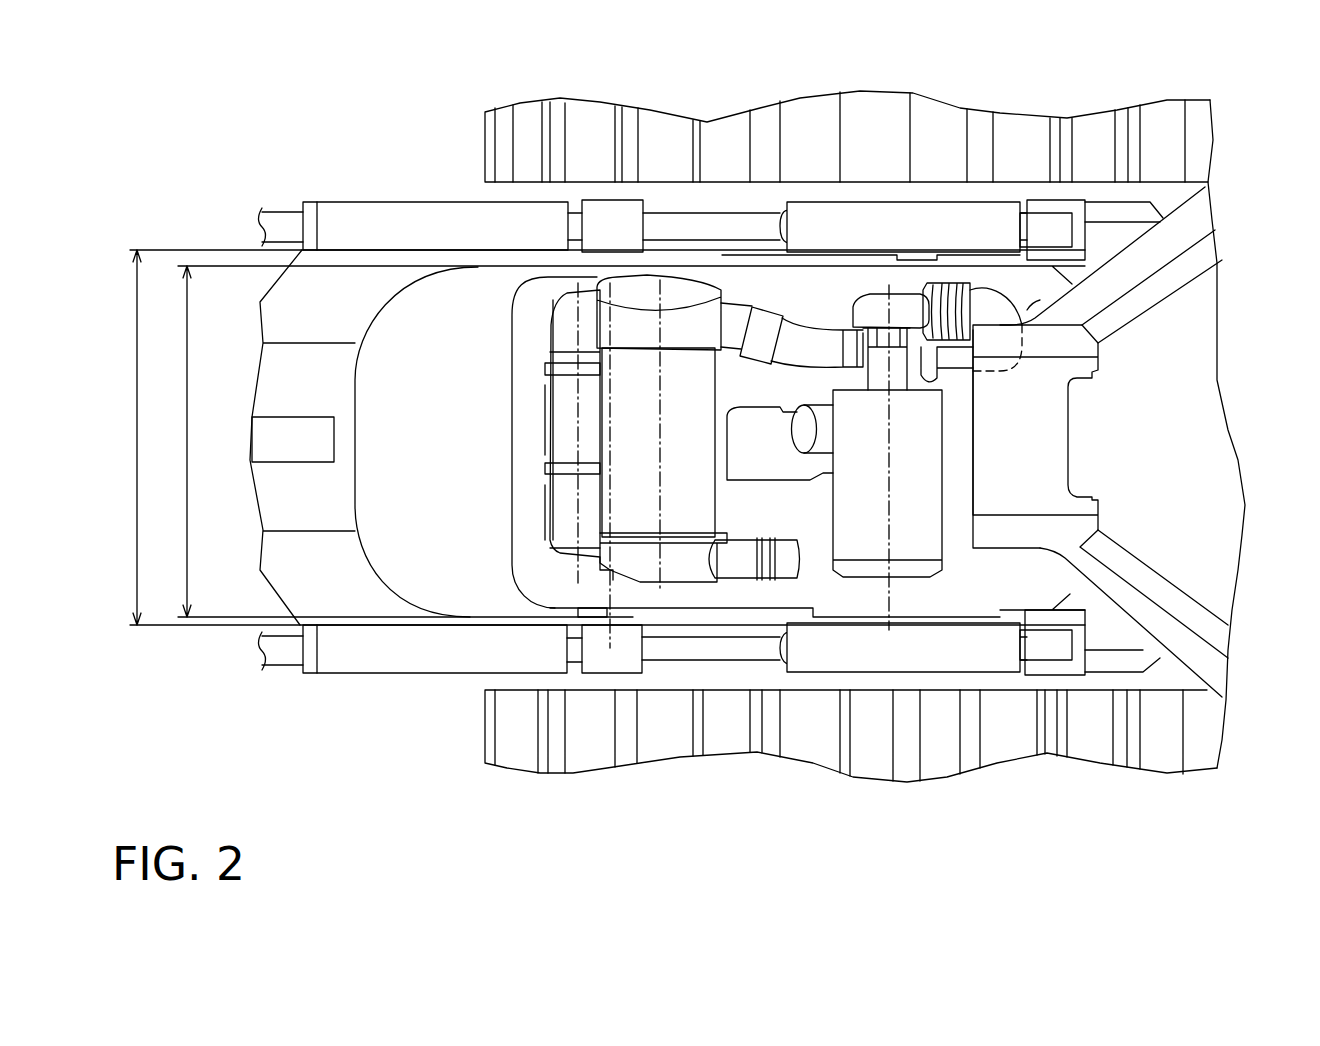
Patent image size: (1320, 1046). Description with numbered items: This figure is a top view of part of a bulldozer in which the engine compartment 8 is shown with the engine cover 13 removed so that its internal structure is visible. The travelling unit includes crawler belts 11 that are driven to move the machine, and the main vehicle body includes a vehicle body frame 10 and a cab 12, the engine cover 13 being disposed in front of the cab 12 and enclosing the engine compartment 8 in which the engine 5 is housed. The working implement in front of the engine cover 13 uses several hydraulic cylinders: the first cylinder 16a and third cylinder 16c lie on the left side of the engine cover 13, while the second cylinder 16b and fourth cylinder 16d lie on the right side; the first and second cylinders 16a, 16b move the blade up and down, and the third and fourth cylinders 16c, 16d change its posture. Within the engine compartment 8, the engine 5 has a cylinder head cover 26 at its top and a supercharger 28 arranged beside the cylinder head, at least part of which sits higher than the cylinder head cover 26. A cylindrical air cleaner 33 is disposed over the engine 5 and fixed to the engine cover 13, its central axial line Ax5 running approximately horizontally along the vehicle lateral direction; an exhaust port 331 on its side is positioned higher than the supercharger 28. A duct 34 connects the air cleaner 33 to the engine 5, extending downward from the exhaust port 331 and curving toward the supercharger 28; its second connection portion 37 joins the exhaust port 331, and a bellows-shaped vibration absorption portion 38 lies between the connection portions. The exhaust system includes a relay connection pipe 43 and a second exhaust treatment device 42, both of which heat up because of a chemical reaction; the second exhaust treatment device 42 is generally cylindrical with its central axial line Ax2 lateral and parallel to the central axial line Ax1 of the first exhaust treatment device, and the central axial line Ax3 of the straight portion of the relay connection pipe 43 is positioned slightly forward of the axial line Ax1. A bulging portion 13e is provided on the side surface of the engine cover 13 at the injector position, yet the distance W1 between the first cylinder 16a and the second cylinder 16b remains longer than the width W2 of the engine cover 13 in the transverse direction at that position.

The engine 5 is at (953, 402).
The engine compartment 8 is at (770, 303).
The vehicle body frame 10 is at (950, 273).
The crawler belts 11 is at (653, 127).
The cab 12 is at (1143, 333).
The engine cover 13 is at (538, 298).
The bulging portion 13e is at (603, 618).
The first cylinder 16a is at (882, 653).
The second cylinder 16b is at (883, 217).
The third cylinder 16c is at (362, 660).
The fourth cylinder 16d is at (382, 213).
The cylinder head cover 26 is at (748, 457).
The supercharger 28 is at (913, 353).
The air cleaner 33 is at (853, 547).
The exhaust port 331 is at (880, 318).
The duct 34 is at (913, 290).
The second connection portion 37 is at (903, 350).
The vibration absorption portion 38 is at (988, 280).
The second exhaust treatment device 42 is at (665, 570).
The relay connection pipe 43 is at (568, 520).
The central axial line of the first exhaust treatment device Ax1 is at (610, 648).
The central axial line of the second exhaust treatment device Ax2 is at (657, 275).
The central axial line of the straight line portion of the relay connection pipe Ax3 is at (578, 288).
The central axial line of the air cleaner Ax5 is at (889, 630).
The distance between the first cylinder and the second cylinder W1 is at (123, 437).
The width of the engine cover W2 is at (173, 441).